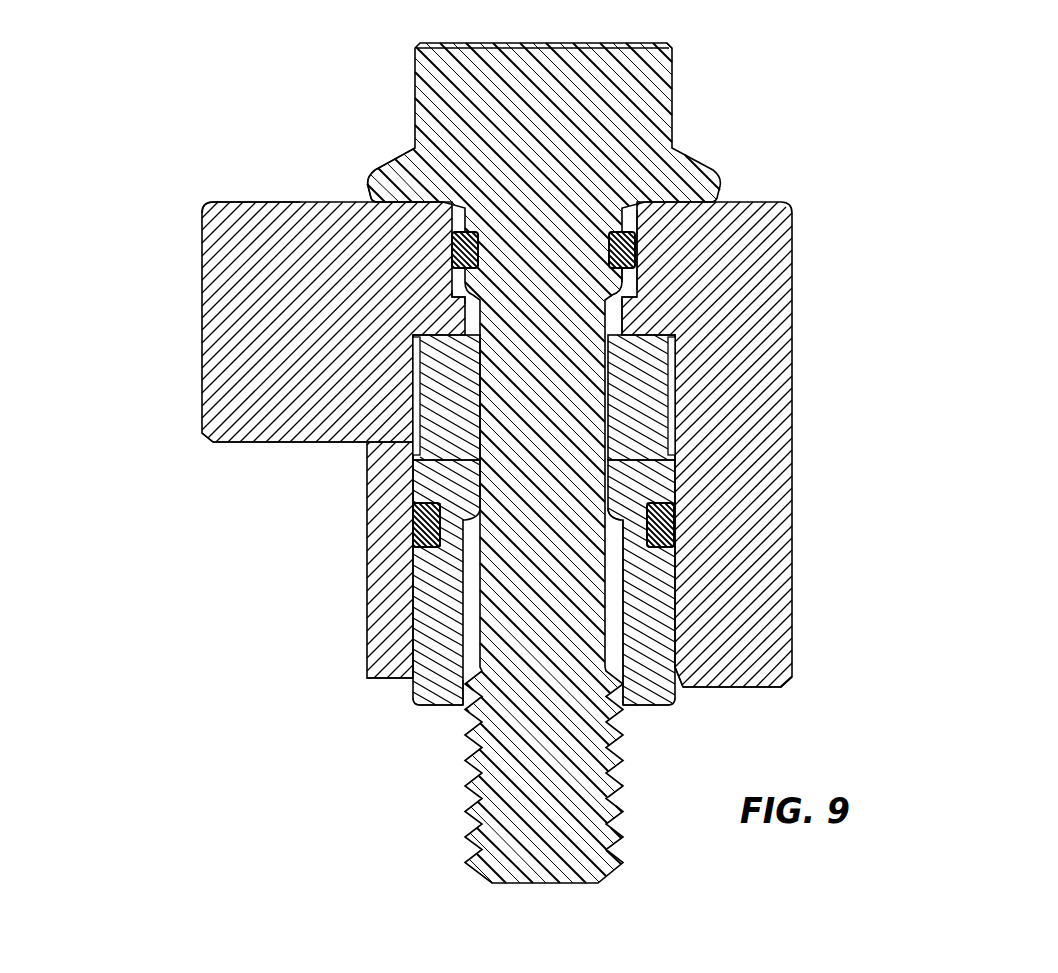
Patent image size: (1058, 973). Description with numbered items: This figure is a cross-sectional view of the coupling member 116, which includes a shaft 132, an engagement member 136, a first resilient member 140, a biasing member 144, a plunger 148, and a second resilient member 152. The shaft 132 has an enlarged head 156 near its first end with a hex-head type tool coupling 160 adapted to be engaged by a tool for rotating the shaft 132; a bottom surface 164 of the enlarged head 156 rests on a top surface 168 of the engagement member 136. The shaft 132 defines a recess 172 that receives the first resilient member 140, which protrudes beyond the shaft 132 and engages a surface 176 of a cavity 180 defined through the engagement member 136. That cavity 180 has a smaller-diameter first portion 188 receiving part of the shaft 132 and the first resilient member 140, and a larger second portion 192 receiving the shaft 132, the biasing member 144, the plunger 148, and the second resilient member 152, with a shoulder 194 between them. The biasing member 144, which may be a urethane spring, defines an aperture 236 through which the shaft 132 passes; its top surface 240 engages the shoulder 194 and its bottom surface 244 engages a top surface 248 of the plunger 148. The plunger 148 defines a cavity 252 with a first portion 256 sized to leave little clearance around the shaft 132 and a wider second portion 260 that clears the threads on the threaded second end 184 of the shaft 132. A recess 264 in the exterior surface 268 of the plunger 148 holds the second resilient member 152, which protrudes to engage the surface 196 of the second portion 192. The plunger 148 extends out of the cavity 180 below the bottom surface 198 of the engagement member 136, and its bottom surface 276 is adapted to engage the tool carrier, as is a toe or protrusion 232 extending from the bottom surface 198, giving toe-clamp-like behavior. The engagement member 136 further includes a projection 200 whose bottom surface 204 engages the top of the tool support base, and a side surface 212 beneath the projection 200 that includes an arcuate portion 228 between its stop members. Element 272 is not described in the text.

The coupling member 116 is at (128, 146).
The shaft 132 is at (436, 758).
The enlarged head 156 is at (375, 110).
The tool coupling 160 is at (652, 102).
The bottom surface of the enlarged head 164 is at (357, 203).
The top surface of the engagement member 168 is at (240, 202).
The recess 172 is at (453, 246).
The first resilient member 140 is at (637, 247).
The first portion of the cavity 188 is at (640, 262).
The top surface of the biasing member 240 is at (632, 278).
The engagement member 136 is at (808, 303).
The surface of the first portion 176 is at (462, 298).
The aperture 236 is at (598, 362).
The biasing member 144 is at (640, 380).
The shoulder 194 is at (428, 368).
The second portion of the cavity 192 is at (682, 400).
The projection 200 is at (200, 442).
The bottom surface of the projection 204 is at (260, 445).
The bottom surface of the biasing member 244 is at (612, 478).
The top surface of the plunger 248 is at (420, 457).
The side surface 212 is at (358, 490).
The first portion of the plunger cavity 256 is at (660, 522).
The recess in the plunger 264 is at (430, 522).
The second resilient member 152 is at (440, 547).
The plunger cavity 252 is at (632, 558).
The plunger 148 is at (684, 598).
The arcuate portion 228 is at (365, 612).
The surface of the second portion 196 is at (420, 627).
The second portion of the plunger cavity 260 is at (628, 622).
The protrusion 232 is at (770, 690).
The bottom surface of the engagement member 198 is at (385, 680).
The exterior surface of the plunger 268 is at (413, 690).
The insert corner 272 is at (470, 702).
The cavity 180 is at (680, 694).
The bottom surface of the plunger 276 is at (650, 708).
The second end 184 is at (468, 842).